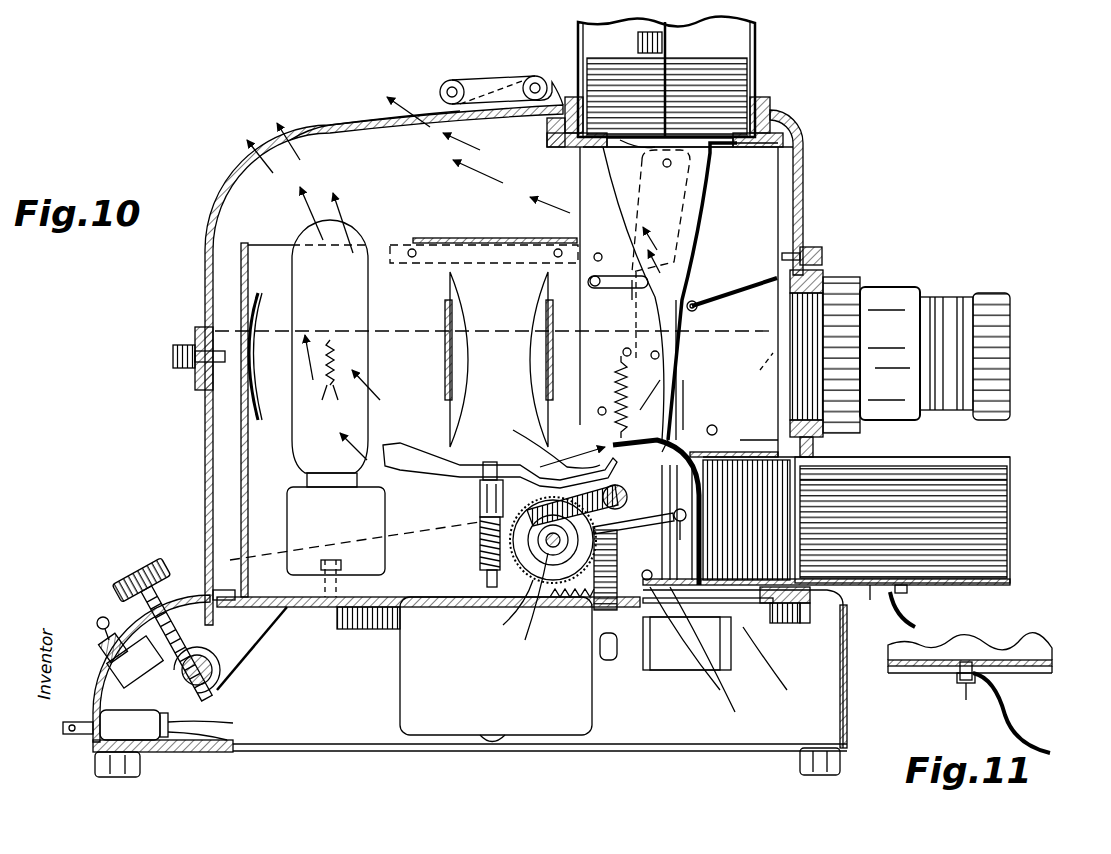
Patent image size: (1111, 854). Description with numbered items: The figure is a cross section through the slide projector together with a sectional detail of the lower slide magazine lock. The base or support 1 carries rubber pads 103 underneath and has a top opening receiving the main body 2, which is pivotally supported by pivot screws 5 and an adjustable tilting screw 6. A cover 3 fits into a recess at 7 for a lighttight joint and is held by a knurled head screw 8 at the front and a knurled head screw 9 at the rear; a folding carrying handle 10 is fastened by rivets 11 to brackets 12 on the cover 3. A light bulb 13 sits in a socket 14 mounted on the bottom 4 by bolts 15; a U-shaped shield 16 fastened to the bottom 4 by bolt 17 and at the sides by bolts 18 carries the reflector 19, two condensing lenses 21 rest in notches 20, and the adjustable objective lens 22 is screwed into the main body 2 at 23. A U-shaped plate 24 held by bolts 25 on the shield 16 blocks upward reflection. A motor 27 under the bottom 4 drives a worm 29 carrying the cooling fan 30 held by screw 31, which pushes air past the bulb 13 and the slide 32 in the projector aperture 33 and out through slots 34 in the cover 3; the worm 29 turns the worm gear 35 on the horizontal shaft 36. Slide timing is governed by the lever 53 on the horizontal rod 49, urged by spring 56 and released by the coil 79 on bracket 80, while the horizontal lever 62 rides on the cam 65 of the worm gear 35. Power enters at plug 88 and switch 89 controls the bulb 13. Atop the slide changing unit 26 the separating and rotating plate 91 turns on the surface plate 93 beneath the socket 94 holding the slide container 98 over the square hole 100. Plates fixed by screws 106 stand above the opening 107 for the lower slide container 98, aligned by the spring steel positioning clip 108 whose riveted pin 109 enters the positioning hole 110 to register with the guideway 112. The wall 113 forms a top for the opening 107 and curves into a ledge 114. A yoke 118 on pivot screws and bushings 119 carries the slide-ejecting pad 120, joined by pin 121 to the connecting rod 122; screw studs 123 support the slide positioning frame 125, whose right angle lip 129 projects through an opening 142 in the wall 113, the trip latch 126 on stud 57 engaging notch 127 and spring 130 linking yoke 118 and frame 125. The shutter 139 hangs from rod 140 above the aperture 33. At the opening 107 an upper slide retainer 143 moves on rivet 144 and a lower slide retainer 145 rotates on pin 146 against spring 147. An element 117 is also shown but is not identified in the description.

In FIG. 10, the base or support 1 is at (290, 748).
In FIG. 10, the main body 2 is at (205, 458).
In FIG. 10, the cover 3 is at (803, 180).
In FIG. 10, the bottom 4 is at (307, 610).
In FIG. 10, the pivot screws 5 is at (627, 620).
In FIG. 10, the adjustable tilting screw 6 is at (222, 707).
In FIG. 10, the recess 7 is at (200, 318).
In FIG. 10, the knurled head screw 8 is at (822, 255).
In FIG. 10, the knurled head screw 9 is at (173, 357).
In FIG. 10, the folding carrying handle 10 is at (470, 80).
In FIG. 10, the rivets 11 is at (535, 76).
In FIG. 10, the brackets 12 is at (550, 103).
In FIG. 10, the light bulb 13 is at (320, 235).
In FIG. 10, the socket 14 is at (290, 537).
In FIG. 10, the bolts 15 is at (345, 630).
In FIG. 10, the shield 16 is at (265, 247).
In FIG. 10, the bolt 17 is at (215, 560).
In FIG. 10, the bolts 18 is at (594, 258).
In FIG. 10, the reflector 19 is at (280, 300).
In FIG. 10, the notches 20 is at (538, 376).
In FIG. 10, the condensing lenses 21 is at (466, 315).
In FIG. 10, the adjustable objective lens 22 is at (948, 292).
In FIG. 10, the threaded portion 23 is at (823, 280).
In FIG. 10, the U-shaped plate 24 is at (472, 240).
In FIG. 10, the bolts 25 is at (410, 250).
In FIG. 10, the slide changing unit 26 is at (770, 175).
In FIG. 10, the motor 27 is at (400, 722).
In FIG. 10, the worm 29 is at (480, 545).
In FIG. 10, the cooling fan 30 is at (395, 457).
In FIG. 10, the screw 31 is at (490, 462).
In FIG. 10, the slide 32 is at (684, 58).
In FIG. 10, the projector aperture 33 is at (680, 375).
In FIG. 10, the slots 34 is at (365, 120).
In FIG. 10, the worm gear 35 is at (520, 580).
In FIG. 10, the horizontal shaft 36 is at (570, 630).
In FIG. 10, the horizontal rod 49 is at (550, 450).
In FIG. 10, the lever 53 is at (587, 617).
In FIG. 10, the spring 56 is at (575, 590).
In FIG. 10, the pin or stud 57 is at (594, 284).
In FIG. 10, the horizontal lever 62 is at (540, 500).
In FIG. 10, the cam 65 is at (540, 640).
In FIG. 10, the coil 79 is at (667, 670).
In FIG. 10, the bracket 80 is at (770, 625).
In FIG. 10, the plug 88 is at (70, 722).
In FIG. 10, the switch 89 is at (100, 618).
In FIG. 10, the separating and rotating plate 91 is at (547, 130).
In FIG. 10, the surface plate 93 is at (550, 147).
In FIG. 10, the socket 94 is at (768, 100).
In FIG. 10, the slide container 98 is at (755, 68).
In FIG. 11, the slide container 98 is at (975, 650).
In FIG. 10, the square hole 100 is at (623, 145).
In FIG. 10, the rubber pads 103 is at (135, 776).
In FIG. 10, the screws 106 is at (790, 625).
In FIG. 10, the opening 107 is at (813, 453).
In FIG. 10, the spring steel positioning clip 108 is at (915, 627).
In FIG. 11, the spring steel positioning clip 108 is at (1017, 733).
In FIG. 10, the riveted pin 109 is at (870, 600).
In FIG. 11, the riveted pin 109 is at (962, 700).
In FIG. 10, the positioning hole 110 is at (903, 587).
In FIG. 11, the positioning hole 110 is at (972, 662).
In FIG. 10, the guideway 112 is at (665, 272).
In FIG. 10, the wall 113 is at (690, 238).
In FIG. 10, the ledge 114 is at (710, 160).
In FIG. 10, the film 117 is at (803, 505).
In FIG. 10, the yoke 118 is at (637, 211).
In FIG. 10, the pivot screws and bushings 119 is at (667, 167).
In FIG. 10, the slide-ejecting pad 120 is at (660, 485).
In FIG. 10, the pin 121 is at (688, 540).
In FIG. 10, the connecting rod 122 is at (600, 458).
In FIG. 10, the screw studs 123 is at (662, 354).
In FIG. 10, the slide positioning frame 125 is at (625, 347).
In FIG. 10, the trip latch 126 is at (632, 280).
In FIG. 10, the notch 127 is at (640, 305).
In FIG. 10, the right angle lip 129 is at (685, 415).
In FIG. 10, the spring 130 is at (618, 395).
In FIG. 10, the shutter 139 is at (732, 290).
In FIG. 10, the rod 140 is at (692, 311).
In FIG. 10, the opening 142 is at (668, 440).
In FIG. 10, the upper slide retainer 143 is at (715, 445).
In FIG. 10, the rivet 144 is at (718, 430).
In FIG. 10, the lower slide retainer 145 is at (787, 690).
In FIG. 10, the pin 146 is at (738, 715).
In FIG. 10, the spring 147 is at (722, 692).